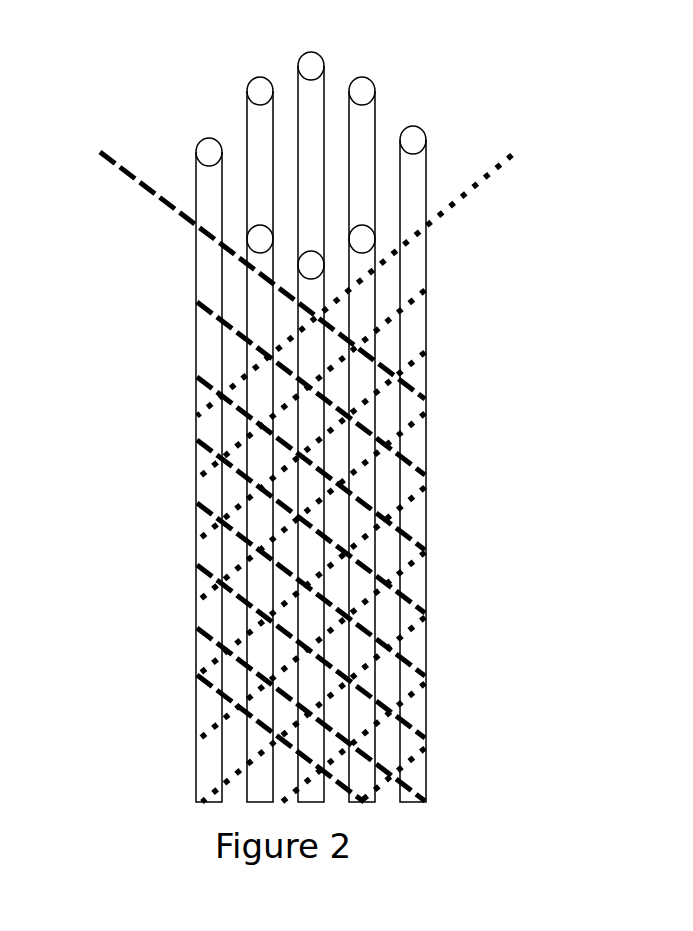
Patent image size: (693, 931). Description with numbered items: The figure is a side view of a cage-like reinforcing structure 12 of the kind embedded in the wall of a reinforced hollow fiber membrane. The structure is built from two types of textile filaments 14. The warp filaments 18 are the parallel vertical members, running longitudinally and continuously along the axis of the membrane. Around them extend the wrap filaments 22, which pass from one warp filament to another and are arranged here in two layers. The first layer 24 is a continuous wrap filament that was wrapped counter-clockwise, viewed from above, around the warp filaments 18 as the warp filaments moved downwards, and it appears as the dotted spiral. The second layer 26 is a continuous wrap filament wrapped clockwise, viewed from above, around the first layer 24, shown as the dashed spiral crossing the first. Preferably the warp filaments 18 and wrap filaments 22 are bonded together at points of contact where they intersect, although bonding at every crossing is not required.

The reinforcing structure 12 is at (160, 579).
The textile filaments 14 is at (310, 107).
The warp filaments 18 is at (311, 427).
The wrap filaments 22 is at (167, 212).
The first layer 24 is at (453, 208).
The second layer 26 is at (127, 165).